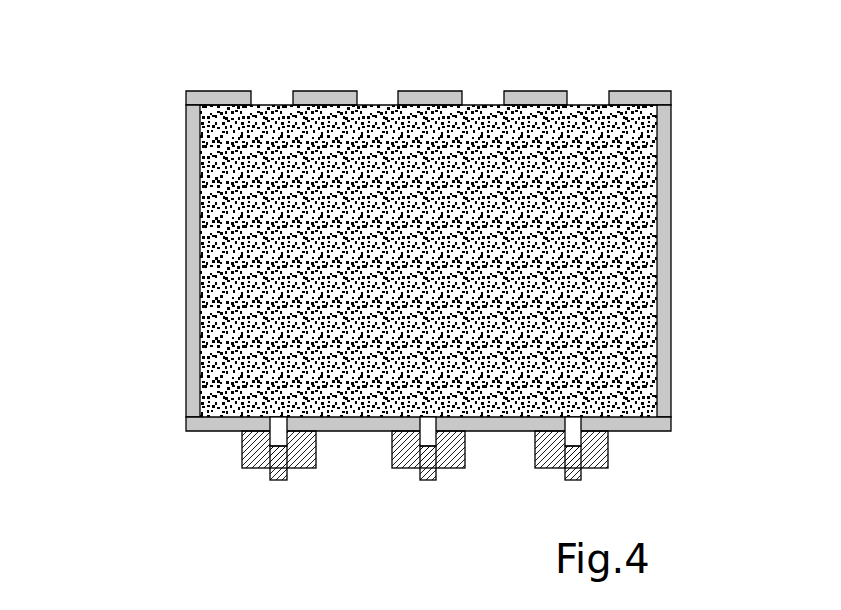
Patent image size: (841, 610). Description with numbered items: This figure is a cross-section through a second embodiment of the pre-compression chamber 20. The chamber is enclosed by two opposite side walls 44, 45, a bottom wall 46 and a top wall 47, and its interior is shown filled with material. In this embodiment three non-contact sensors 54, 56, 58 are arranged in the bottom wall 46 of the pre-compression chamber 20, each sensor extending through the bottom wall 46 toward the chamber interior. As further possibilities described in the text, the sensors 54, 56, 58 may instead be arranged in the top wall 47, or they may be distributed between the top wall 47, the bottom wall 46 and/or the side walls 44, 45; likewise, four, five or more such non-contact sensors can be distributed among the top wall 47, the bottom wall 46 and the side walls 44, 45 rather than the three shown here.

The pre-compression chamber 20 is at (415, 281).
The side wall 44 is at (187, 277).
The side wall 45 is at (670, 378).
The bottom wall 46 is at (510, 420).
The top wall 47 is at (423, 100).
The non-contact sensor 54 is at (240, 465).
The non-contact sensor 56 is at (398, 460).
The non-contact sensor 58 is at (546, 459).